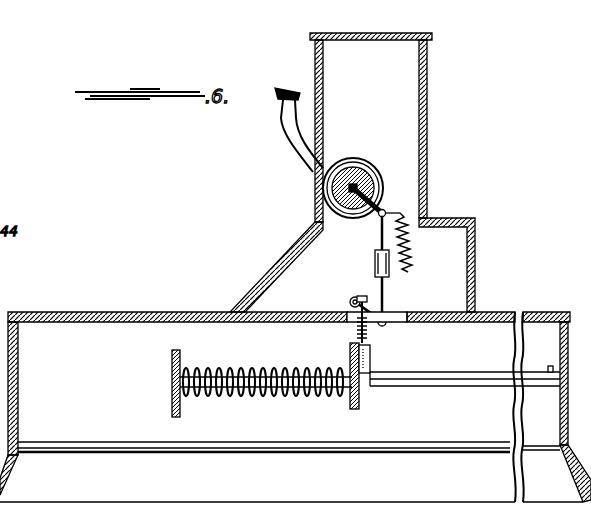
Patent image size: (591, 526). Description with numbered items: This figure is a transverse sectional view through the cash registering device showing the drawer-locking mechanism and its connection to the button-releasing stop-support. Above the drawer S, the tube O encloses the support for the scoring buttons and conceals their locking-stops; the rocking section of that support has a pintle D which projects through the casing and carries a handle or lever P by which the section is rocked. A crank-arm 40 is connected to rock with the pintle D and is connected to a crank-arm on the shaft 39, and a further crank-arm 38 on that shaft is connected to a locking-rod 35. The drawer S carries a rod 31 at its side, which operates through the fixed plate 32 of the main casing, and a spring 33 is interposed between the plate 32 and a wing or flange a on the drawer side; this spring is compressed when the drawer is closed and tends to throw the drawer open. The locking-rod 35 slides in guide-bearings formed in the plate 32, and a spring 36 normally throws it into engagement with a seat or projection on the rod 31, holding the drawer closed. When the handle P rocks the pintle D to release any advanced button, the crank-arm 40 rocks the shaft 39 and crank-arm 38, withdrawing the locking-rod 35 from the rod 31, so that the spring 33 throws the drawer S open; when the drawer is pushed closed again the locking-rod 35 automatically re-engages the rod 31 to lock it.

The rod 31 is at (430, 373).
The plate 32 is at (351, 347).
The spring 33 is at (220, 370).
The locking-rod 35 is at (372, 357).
The spring 36 is at (358, 332).
The crank-arm 38 is at (370, 300).
The shaft 39 is at (349, 303).
The crank-arm 40 is at (380, 202).
The handle or lever P is at (338, 157).
The tube O is at (350, 222).
The pintle D is at (365, 182).
The housing H is at (478, 264).
The drawer S is at (295, 407).
The wing or flange a is at (172, 354).